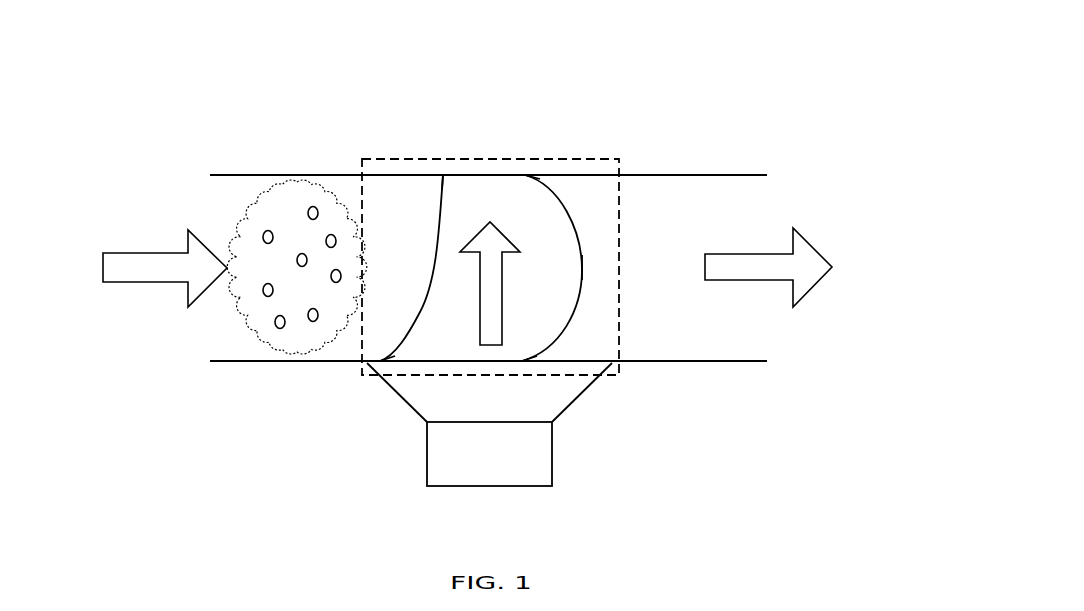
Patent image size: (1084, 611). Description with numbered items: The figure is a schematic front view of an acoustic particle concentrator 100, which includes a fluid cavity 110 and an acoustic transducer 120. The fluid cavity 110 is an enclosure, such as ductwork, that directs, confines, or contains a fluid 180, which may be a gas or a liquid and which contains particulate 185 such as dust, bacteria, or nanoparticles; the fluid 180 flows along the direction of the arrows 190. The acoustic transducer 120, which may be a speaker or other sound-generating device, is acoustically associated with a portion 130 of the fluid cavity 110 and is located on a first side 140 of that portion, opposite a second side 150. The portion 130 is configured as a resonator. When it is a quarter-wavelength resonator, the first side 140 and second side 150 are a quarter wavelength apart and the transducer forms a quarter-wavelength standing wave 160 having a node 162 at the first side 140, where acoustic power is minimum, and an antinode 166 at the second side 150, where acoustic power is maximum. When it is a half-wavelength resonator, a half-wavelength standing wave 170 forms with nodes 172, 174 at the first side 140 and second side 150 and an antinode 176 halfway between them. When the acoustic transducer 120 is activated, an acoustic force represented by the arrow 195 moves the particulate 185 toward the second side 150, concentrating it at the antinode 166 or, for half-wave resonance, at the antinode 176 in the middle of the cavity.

The acoustic particle concentrator 100 is at (772, 110).
The fluid cavity 110 is at (227, 175).
The acoustic transducer 120 is at (427, 465).
The portion of the fluid cavity 130 is at (368, 156).
The first side 140 is at (425, 374).
The second side 150 is at (471, 162).
The quarter-wavelength standing wave 160 is at (436, 240).
The node 162 is at (380, 366).
The antinode 166 is at (440, 170).
The half-wavelength standing wave 170 is at (573, 220).
The node 172 is at (525, 365).
The node 174 is at (524, 170).
The antinode 176 is at (586, 264).
The fluid 180 is at (293, 182).
The particulate 185 is at (311, 322).
The arrows 190 is at (167, 283).
The arrow 195 is at (502, 305).